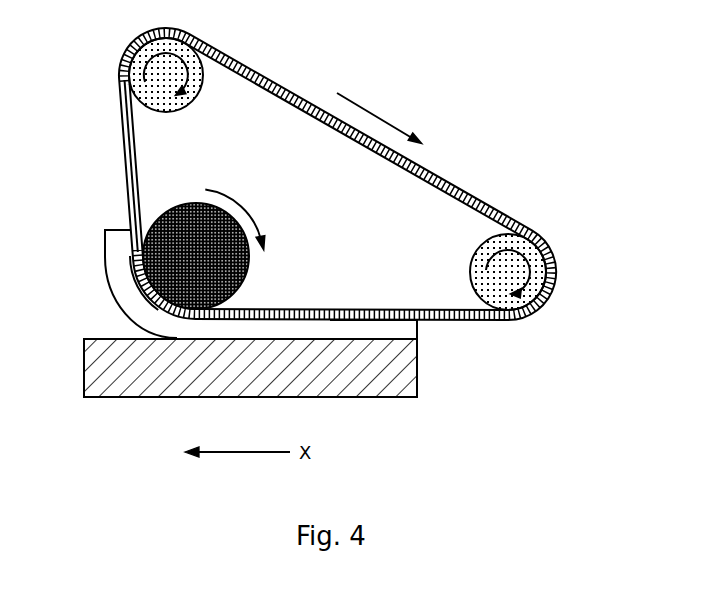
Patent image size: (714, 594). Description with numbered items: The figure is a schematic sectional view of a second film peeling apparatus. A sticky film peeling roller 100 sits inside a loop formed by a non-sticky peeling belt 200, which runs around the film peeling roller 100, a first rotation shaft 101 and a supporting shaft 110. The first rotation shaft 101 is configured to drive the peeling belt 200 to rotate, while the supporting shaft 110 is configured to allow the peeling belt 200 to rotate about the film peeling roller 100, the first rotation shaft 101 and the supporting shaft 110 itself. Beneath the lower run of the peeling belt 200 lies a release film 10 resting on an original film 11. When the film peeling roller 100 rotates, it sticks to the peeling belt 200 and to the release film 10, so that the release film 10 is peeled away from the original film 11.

The first rotation shaft 101 is at (135, 92).
The supporting shaft 110 is at (546, 262).
The film peeling roller 100 is at (228, 278).
The peeling belt 200 is at (128, 170).
The release film 10 is at (403, 328).
The original film 11 is at (403, 385).